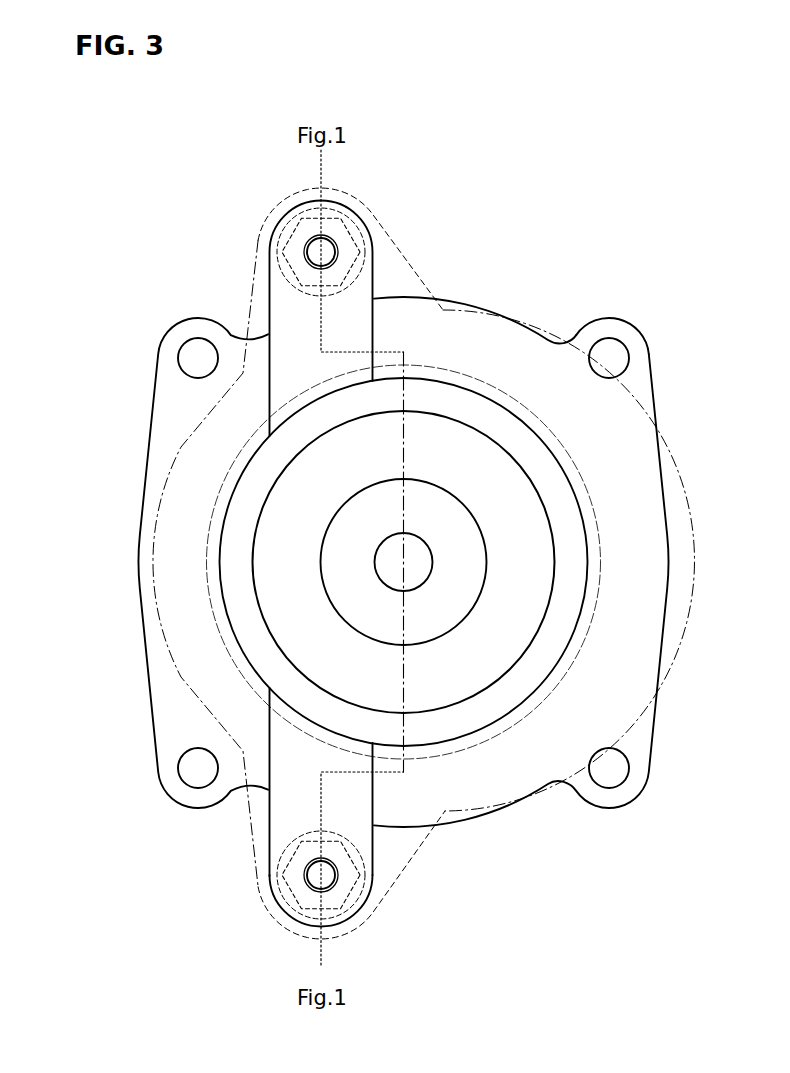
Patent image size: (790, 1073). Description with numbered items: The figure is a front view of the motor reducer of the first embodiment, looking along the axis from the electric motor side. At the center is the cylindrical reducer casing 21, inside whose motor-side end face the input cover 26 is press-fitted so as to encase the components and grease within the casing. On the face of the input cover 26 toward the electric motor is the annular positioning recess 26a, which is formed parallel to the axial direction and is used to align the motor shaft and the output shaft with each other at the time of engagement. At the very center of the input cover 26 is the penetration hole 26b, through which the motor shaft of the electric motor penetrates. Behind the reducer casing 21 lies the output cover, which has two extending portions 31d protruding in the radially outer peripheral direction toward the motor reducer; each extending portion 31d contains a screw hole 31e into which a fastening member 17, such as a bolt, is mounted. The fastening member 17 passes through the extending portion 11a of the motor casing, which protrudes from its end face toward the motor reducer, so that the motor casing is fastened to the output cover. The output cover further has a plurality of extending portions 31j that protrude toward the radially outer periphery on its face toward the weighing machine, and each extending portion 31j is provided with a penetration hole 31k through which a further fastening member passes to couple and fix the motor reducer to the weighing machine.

The extending portion 11a is at (250, 850).
The fastening member 17 is at (275, 902).
The reducer casing 21 is at (260, 468).
The input cover 26 is at (295, 640).
The positioning recess 26a is at (360, 497).
The penetration hole 26b is at (378, 563).
The extending portion 31d is at (250, 293).
The screw hole 31e is at (305, 248).
The extending portion 31j is at (578, 348).
The penetration hole 31k is at (202, 350).